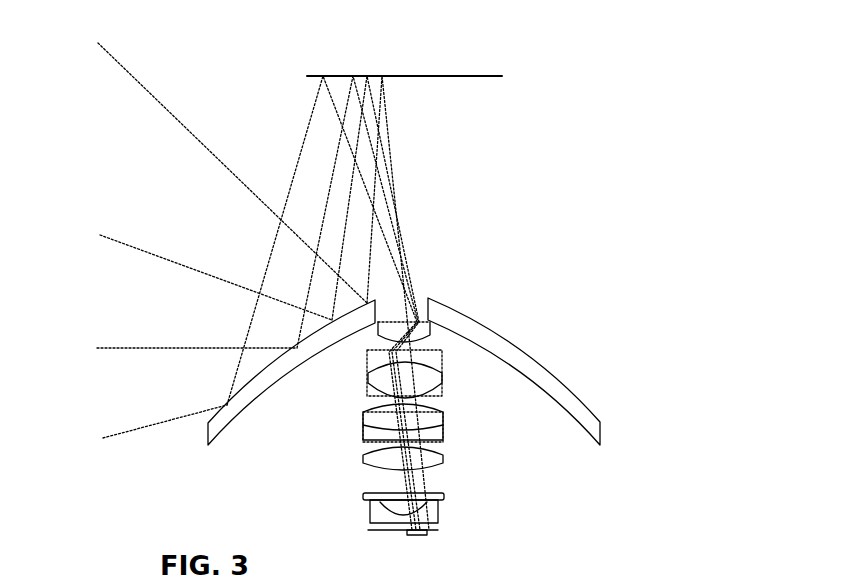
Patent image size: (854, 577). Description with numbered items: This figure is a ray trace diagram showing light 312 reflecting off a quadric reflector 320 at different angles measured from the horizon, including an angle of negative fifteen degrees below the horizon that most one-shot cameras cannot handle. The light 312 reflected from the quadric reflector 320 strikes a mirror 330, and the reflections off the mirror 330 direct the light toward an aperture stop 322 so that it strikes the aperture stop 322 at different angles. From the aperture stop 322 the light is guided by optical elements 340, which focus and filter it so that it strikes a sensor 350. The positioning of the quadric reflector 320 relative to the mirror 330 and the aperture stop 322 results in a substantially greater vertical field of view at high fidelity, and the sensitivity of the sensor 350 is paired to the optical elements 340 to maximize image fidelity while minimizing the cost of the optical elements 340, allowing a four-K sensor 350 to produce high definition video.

The light 312 is at (150, 460).
The mirror 330 is at (420, 76).
The quadric reflector 320 is at (503, 350).
The aperture stop 322 is at (421, 320).
The optical elements 340 is at (452, 412).
The sensor 350 is at (453, 519).